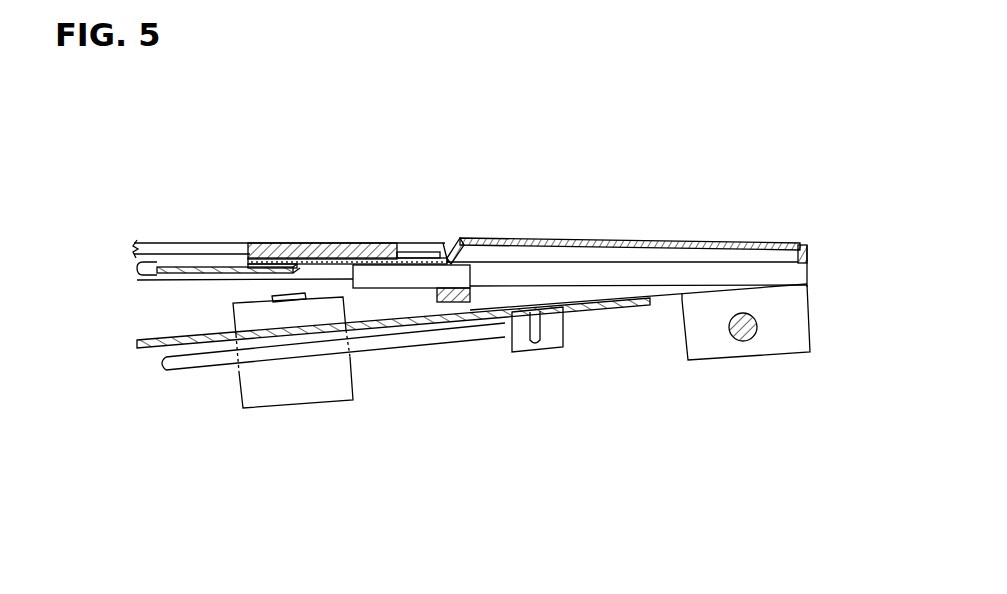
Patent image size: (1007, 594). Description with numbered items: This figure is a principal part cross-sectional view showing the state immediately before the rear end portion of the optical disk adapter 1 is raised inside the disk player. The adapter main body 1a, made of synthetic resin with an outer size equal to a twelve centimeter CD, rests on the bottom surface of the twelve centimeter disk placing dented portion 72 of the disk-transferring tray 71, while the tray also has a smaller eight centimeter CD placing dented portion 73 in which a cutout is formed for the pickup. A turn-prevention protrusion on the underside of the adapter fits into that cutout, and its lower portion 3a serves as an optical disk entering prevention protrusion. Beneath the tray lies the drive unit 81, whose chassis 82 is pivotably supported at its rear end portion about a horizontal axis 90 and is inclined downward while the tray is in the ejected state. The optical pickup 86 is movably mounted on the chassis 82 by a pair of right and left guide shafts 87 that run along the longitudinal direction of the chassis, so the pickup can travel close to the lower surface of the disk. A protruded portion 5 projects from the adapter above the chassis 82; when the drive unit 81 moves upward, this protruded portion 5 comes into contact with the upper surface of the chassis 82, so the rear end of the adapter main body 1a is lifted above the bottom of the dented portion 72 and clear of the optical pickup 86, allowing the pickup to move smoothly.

The optical disk adapter 1 is at (209, 225).
The adapter main body 1a is at (300, 243).
The lower portion of turn-prevention protruded portion 3a is at (238, 243).
The protruded portion 5 is at (450, 304).
The disk-transferring tray 71 is at (584, 237).
The 12 cm-disk placing dented portion 72 is at (421, 257).
The 8 cm-CD placing dented portion 73 is at (140, 260).
The drive unit 81 is at (610, 307).
The chassis 82 is at (482, 316).
The optical pickup 86 is at (292, 390).
The guide shaft 87 is at (387, 343).
The horizontal axis 90 is at (743, 341).